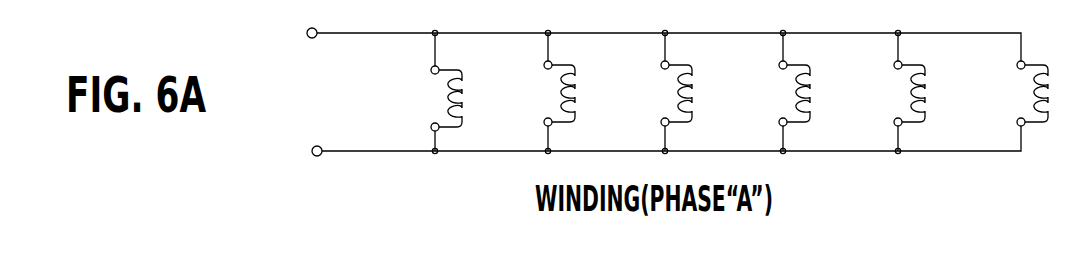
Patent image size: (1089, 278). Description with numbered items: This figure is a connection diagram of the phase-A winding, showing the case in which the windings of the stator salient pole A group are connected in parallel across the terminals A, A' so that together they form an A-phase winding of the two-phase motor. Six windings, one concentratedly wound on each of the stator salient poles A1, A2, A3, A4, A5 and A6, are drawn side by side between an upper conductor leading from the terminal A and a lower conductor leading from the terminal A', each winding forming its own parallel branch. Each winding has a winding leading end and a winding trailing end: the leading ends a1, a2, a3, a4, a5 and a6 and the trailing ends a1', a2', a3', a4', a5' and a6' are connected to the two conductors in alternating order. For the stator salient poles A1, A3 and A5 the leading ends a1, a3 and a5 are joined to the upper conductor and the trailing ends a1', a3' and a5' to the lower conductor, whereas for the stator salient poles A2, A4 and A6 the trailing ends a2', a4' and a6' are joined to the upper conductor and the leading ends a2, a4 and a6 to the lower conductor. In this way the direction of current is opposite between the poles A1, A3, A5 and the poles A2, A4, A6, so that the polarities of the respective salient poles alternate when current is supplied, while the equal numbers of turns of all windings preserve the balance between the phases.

The terminal A is at (297, 35).
The terminal A' is at (298, 147).
The stator salient pole A1 is at (470, 98).
The stator salient pole A2 is at (587, 93).
The stator salient pole A3 is at (702, 93).
The stator salient pole A4 is at (819, 93).
The stator salient pole A5 is at (938, 93).
The stator salient pole A6 is at (1055, 93).
The winding leading end a1 is at (420, 72).
The winding trailing end a1' is at (418, 131).
The winding leading end a2 is at (531, 133).
The winding trailing end a2' is at (533, 63).
The winding leading end a3 is at (650, 69).
The winding trailing end a3' is at (648, 128).
The winding leading end a4 is at (766, 133).
The winding trailing end a4' is at (768, 63).
The winding leading end a5 is at (883, 69).
The winding trailing end a5' is at (881, 128).
The winding leading end a6 is at (1004, 133).
The winding trailing end a6' is at (1004, 63).